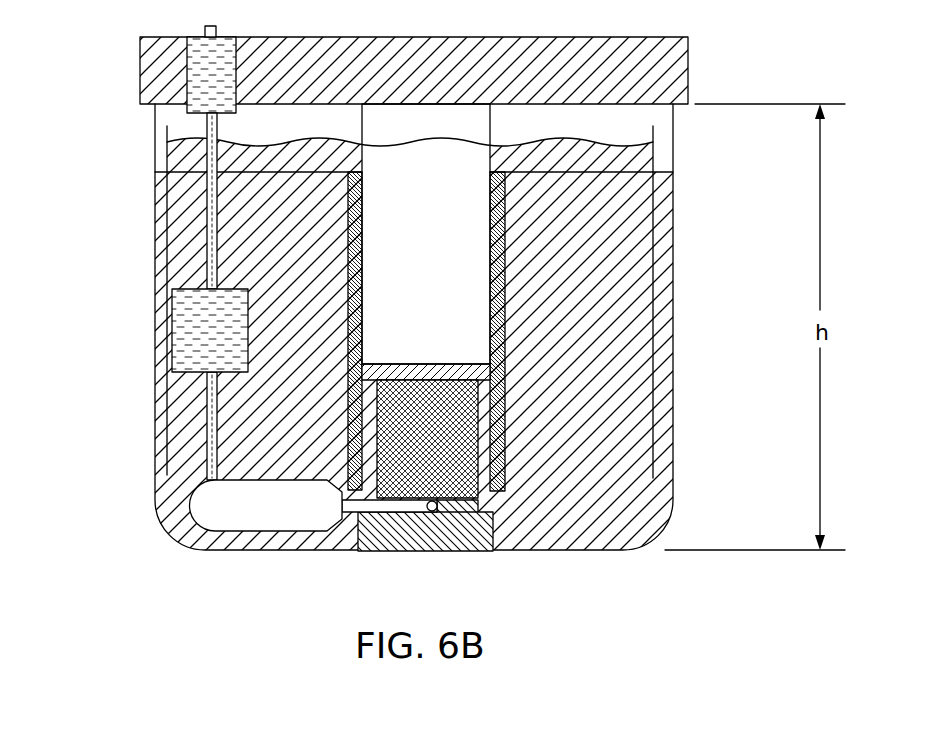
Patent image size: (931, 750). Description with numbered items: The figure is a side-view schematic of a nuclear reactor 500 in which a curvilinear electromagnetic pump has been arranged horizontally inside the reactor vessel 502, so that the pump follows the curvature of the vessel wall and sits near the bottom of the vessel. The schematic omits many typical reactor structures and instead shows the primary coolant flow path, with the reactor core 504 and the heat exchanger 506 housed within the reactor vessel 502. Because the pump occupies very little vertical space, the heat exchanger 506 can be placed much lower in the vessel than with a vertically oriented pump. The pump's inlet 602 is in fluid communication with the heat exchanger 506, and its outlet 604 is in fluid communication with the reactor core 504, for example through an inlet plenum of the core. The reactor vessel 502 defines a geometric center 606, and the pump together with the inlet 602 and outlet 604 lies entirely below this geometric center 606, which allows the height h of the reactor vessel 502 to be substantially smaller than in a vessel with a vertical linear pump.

The nuclear reactor 500 is at (108, 106).
The reactor vessel 502 is at (155, 197).
The reactor core 504 is at (505, 448).
The heat exchanger 506 is at (178, 315).
The inlet 602 is at (212, 440).
The outlet 604 is at (430, 512).
The geometric center 606 is at (450, 308).